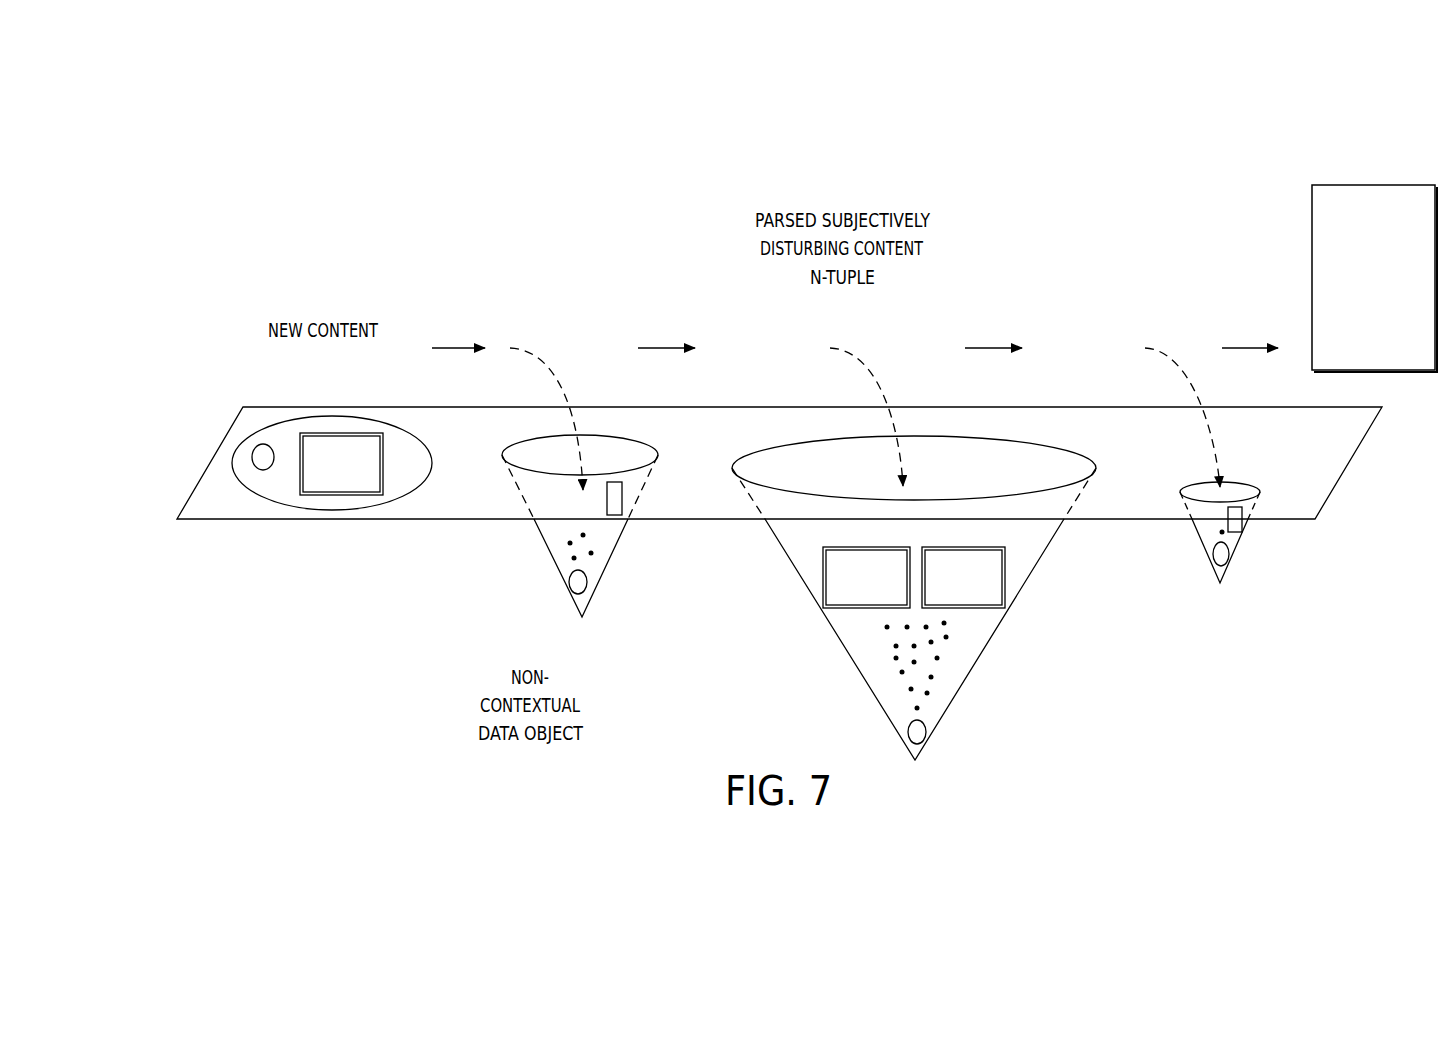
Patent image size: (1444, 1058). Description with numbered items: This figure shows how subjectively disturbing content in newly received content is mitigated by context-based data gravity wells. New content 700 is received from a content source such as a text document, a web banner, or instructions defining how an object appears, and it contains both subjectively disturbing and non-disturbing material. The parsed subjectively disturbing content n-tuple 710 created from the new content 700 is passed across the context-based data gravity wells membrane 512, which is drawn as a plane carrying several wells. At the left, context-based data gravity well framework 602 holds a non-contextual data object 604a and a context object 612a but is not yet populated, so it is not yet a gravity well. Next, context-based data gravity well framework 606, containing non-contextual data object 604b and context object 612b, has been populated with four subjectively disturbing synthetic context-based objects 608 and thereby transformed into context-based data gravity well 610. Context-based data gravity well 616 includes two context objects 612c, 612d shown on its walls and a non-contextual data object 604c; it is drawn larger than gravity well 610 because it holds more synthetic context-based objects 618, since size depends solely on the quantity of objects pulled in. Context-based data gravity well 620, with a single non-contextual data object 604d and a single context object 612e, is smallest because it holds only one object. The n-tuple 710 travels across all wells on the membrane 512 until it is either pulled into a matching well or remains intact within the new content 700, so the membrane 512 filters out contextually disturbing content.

The context-based data gravity wells membrane 512 is at (1313, 454).
The context-based data gravity well framework 602 is at (335, 510).
The non-contextual data object 604a is at (252, 458).
The non-contextual data object 604b is at (572, 593).
The non-contextual data object 604c is at (926, 732).
The non-contextual data object 604d is at (1212, 553).
The context-based data gravity well framework 606 is at (507, 565).
The subjectively disturbing synthetic context-based objects 608 is at (591, 553).
The context-based data gravity well 610 is at (607, 605).
The context object 612a is at (383, 466).
The context object 612b is at (622, 498).
The context object 612c is at (823, 580).
The context object 612d is at (1005, 580).
The context object 612e is at (1242, 527).
The context-based data gravity well 616 is at (1045, 677).
The synthetic context-based objects 618 is at (896, 658).
The context-based data gravity well 620 is at (1248, 573).
The new content 700 is at (348, 372).
The parsed subjectively disturbing content n-tuple 710 is at (510, 348).